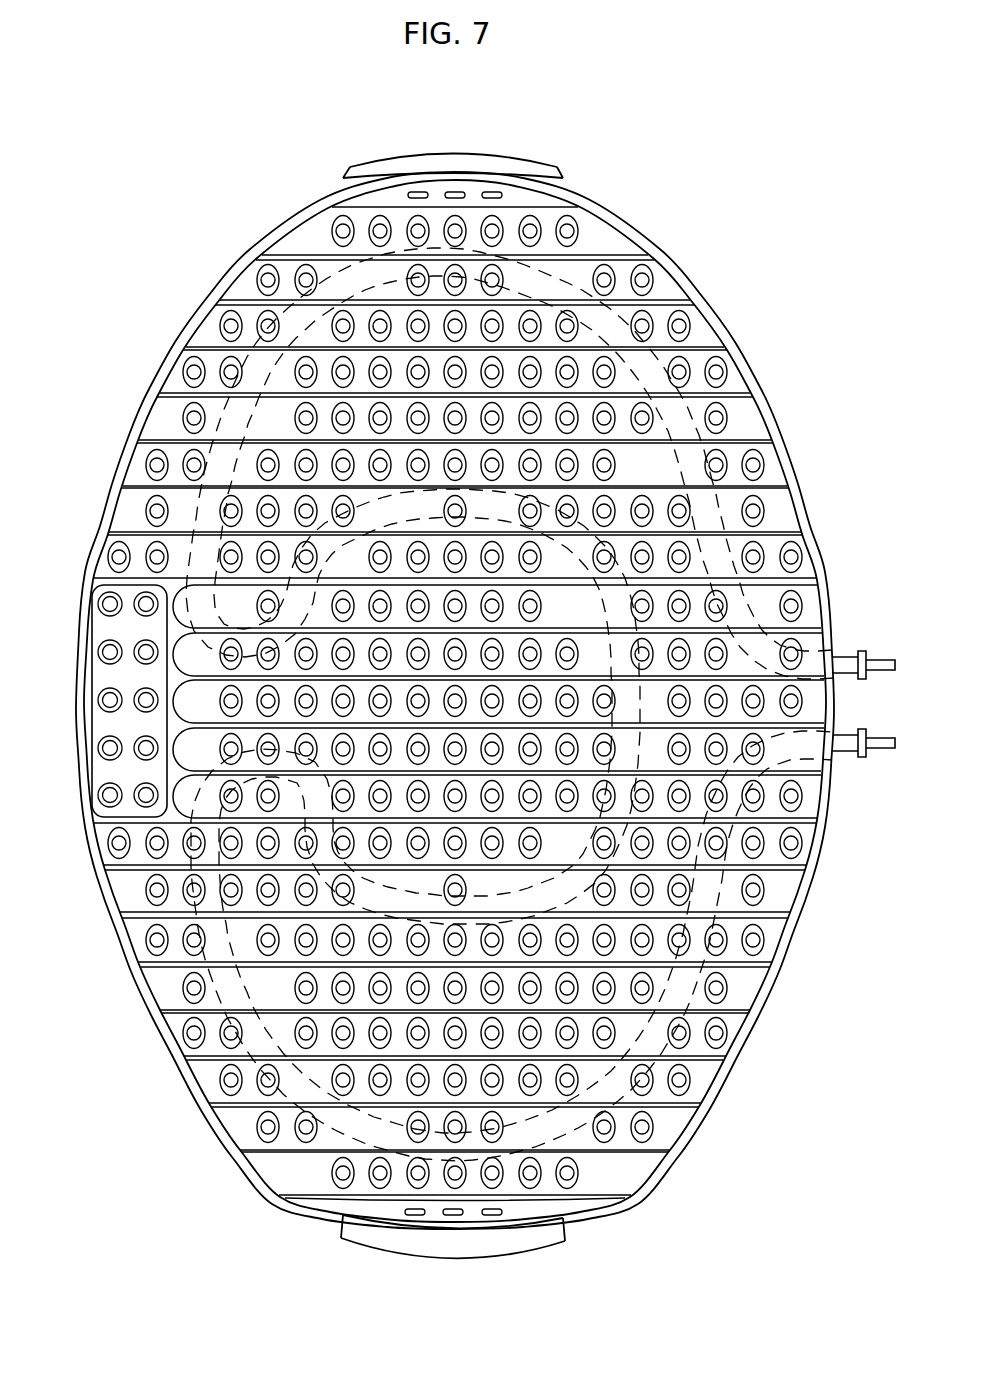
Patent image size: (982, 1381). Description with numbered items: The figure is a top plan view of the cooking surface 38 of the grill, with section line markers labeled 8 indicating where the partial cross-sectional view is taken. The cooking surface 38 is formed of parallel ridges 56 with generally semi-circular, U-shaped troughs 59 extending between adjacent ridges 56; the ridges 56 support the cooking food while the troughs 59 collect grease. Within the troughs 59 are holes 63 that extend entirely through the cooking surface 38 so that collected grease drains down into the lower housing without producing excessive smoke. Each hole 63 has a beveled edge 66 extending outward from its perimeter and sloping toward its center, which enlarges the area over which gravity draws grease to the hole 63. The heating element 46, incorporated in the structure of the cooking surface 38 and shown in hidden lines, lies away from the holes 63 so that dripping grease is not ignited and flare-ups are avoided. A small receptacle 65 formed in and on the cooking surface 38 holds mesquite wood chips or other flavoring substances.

The cooking surface 38 is at (172, 280).
The heating element 46 is at (195, 808).
The parallel ridges 56 is at (137, 962).
The troughs 59 is at (205, 1073).
The holes 63 is at (268, 326).
The small receptacle 65 is at (100, 670).
The beveled edge 66 is at (194, 418).
The section line 8- 8 is at (453, 98).